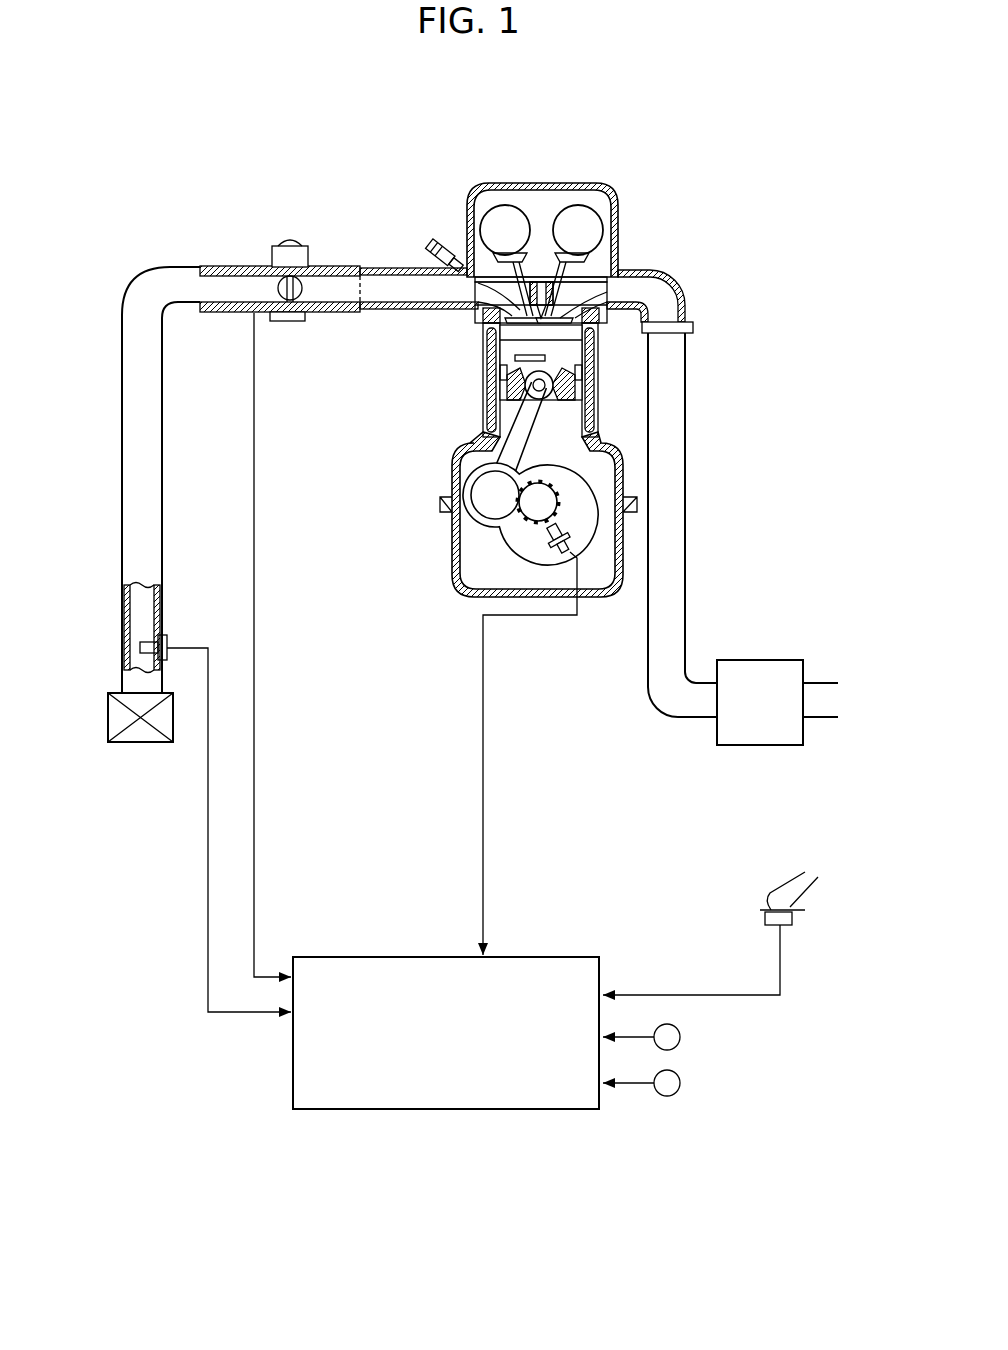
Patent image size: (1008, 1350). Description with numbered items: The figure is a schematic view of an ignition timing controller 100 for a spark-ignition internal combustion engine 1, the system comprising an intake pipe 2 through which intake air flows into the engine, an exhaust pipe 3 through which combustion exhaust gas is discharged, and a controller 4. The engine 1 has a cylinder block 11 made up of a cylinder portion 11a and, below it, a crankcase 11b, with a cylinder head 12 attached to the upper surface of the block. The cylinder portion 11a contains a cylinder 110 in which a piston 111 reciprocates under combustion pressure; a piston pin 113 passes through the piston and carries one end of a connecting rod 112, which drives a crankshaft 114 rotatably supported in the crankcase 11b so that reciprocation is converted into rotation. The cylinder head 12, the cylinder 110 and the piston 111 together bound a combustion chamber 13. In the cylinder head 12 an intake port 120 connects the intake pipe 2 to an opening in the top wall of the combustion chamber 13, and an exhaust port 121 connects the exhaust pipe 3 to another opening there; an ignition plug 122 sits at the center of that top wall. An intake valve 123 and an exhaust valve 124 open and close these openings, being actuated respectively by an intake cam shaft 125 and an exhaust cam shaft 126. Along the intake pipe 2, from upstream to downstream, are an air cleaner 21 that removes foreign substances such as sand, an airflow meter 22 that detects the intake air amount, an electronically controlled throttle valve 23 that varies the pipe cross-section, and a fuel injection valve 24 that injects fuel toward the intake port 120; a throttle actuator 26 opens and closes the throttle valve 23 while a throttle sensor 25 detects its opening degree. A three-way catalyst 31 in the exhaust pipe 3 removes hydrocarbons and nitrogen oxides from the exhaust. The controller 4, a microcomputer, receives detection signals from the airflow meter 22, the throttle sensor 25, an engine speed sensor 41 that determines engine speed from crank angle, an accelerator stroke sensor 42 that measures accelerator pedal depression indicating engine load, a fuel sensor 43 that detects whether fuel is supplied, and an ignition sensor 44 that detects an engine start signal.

The ignition timing controller 100 is at (300, 170).
The spark-ignition internal combustion engine 1 is at (540, 172).
The intake pipe 2 is at (163, 405).
The exhaust pipe 3 is at (686, 452).
The controller 4 is at (553, 1110).
The cylinder block 11 is at (390, 470).
The cylinder portion 11a is at (483, 372).
The crankcase 11b is at (460, 452).
The cylinder head 12 is at (604, 188).
The combustion chamber 13 is at (517, 345).
The air cleaner 21 is at (108, 717).
The airflow meter 22 is at (168, 638).
The throttle valve 23 is at (280, 290).
The fuel injection valve 24 is at (440, 248).
The throttle sensor 25 is at (288, 322).
The throttle actuator 26 is at (285, 242).
The three-way catalyst 31 is at (763, 660).
The engine speed sensor 41 is at (571, 553).
The accelerator stroke sensor 42 is at (772, 925).
The fuel sensor 43 is at (680, 1037).
The ignition sensor 44 is at (680, 1083).
The cylinder 110 is at (547, 360).
The piston 111 is at (555, 352).
The connecting rod 112 is at (537, 425).
The piston pin 113 is at (551, 390).
The crankshaft 114 is at (600, 540).
The intake port 120 is at (442, 294).
The exhaust port 121 is at (590, 300).
The ignition plug 122 is at (562, 296).
The intake valve 123 is at (517, 292).
The exhaust valve 124 is at (668, 322).
The intake cam shaft 125 is at (505, 235).
The exhaust cam shaft 126 is at (578, 235).